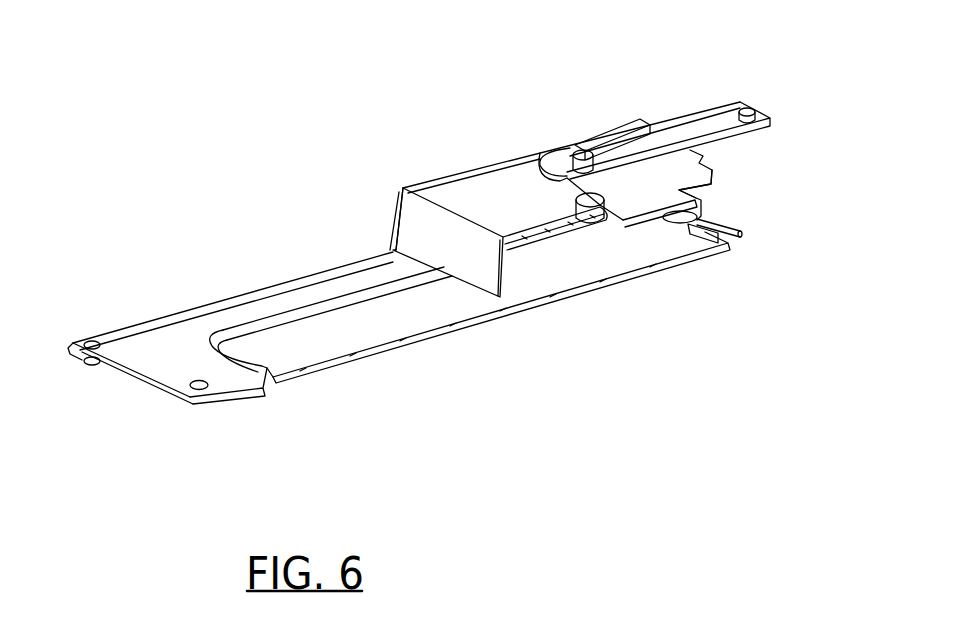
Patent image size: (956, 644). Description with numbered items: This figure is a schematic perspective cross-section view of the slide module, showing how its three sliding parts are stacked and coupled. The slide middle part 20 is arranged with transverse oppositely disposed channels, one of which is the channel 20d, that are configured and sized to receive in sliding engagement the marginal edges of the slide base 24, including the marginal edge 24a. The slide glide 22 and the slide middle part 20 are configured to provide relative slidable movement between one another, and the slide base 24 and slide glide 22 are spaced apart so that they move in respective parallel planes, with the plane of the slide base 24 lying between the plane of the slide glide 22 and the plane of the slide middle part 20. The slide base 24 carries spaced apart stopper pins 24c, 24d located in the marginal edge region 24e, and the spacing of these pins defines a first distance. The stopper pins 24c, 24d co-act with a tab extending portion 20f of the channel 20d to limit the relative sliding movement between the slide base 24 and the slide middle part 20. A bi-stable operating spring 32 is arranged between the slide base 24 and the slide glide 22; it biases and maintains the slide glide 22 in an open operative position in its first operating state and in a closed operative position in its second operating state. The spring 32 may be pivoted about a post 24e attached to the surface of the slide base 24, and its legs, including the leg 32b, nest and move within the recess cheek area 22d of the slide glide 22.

The slide middle part 20 is at (508, 178).
The channel 20d is at (592, 130).
The tab extending portion 20f is at (622, 154).
The slide glide 22 is at (399, 358).
The recess cheek area 22d is at (320, 350).
The slide base 24 is at (636, 189).
The marginal edge 24a is at (678, 118).
The stopper pin 24c is at (585, 148).
The stopper pin 24d is at (745, 102).
The marginal edge region / post 24e is at (703, 187).
The bi-stable operating spring 32 is at (750, 253).
The leg 32b is at (718, 232).